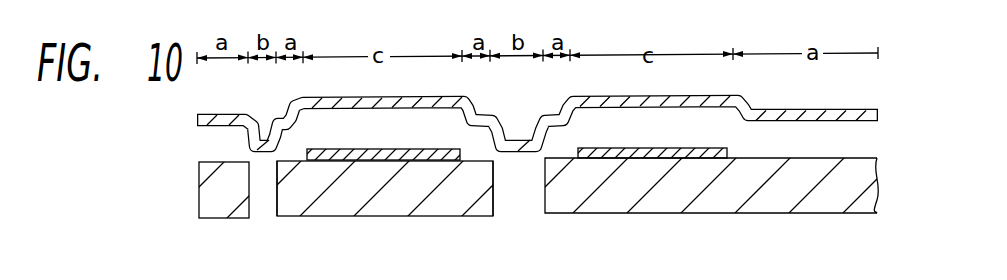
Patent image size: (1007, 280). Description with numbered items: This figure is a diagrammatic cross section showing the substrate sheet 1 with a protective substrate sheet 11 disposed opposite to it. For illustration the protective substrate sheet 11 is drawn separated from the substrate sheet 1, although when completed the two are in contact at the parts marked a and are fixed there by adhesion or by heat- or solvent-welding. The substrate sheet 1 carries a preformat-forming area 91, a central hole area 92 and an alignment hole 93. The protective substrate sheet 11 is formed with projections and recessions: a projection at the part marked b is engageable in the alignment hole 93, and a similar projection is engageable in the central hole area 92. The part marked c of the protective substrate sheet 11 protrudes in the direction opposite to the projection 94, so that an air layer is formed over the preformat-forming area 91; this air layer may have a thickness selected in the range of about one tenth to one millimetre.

The substrate sheet 1 is at (858, 207).
The protective substrate sheet 11 is at (850, 112).
The preformat-forming area 91 is at (379, 154).
The central hole area 92 is at (523, 188).
The alignment hole 93 is at (266, 188).
The projection 94 is at (278, 147).